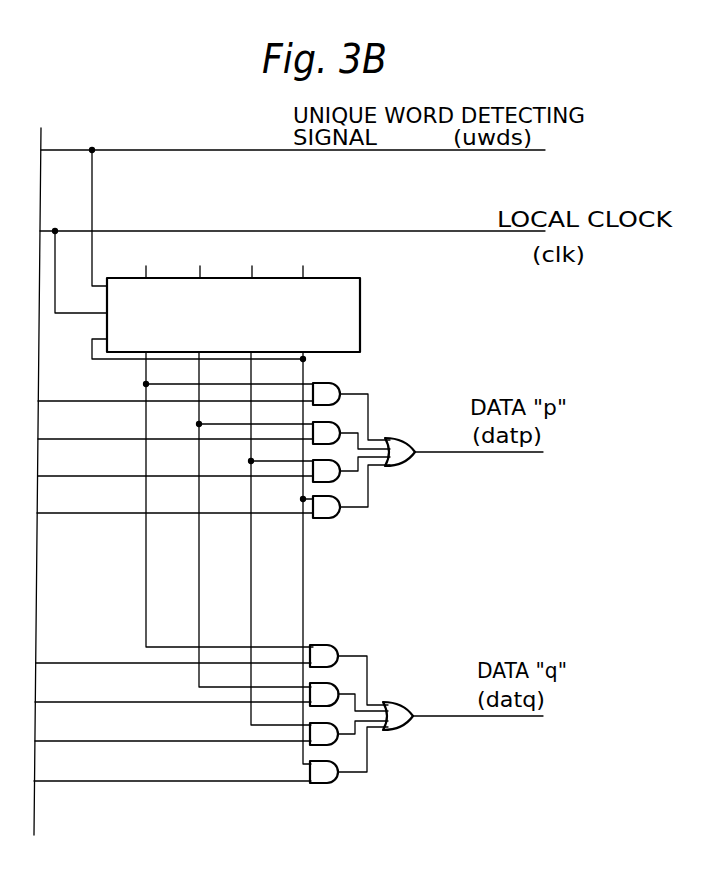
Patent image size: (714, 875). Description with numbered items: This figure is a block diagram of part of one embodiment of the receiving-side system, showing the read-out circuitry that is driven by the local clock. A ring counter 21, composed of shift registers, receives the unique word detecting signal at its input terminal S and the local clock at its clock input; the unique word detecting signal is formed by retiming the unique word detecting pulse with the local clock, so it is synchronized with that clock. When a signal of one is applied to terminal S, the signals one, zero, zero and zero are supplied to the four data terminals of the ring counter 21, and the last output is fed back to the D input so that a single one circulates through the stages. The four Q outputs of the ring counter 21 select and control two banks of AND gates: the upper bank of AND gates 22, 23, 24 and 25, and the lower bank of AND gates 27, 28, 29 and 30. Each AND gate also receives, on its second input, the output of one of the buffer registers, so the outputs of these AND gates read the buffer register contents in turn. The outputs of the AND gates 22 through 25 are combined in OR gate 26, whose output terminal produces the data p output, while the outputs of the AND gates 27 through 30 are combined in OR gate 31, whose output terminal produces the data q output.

The ring counter 21 is at (360, 313).
The AND gate 22 is at (345, 370).
The AND gate 23 is at (334, 422).
The AND gate 24 is at (334, 482).
The AND gate 25 is at (336, 518).
The OR gate 26 is at (400, 441).
The AND gate 27 is at (333, 645).
The AND gate 28 is at (332, 683).
The AND gate 29 is at (332, 745).
The AND gate 30 is at (330, 783).
The OR gate 31 is at (399, 704).